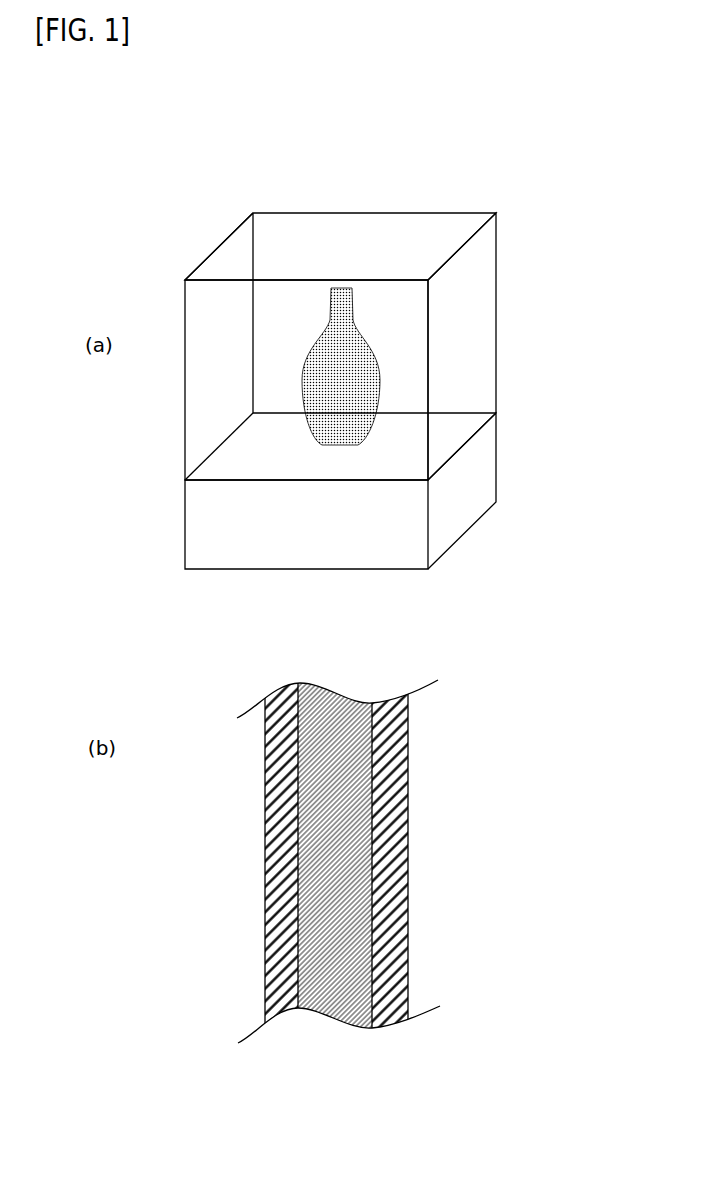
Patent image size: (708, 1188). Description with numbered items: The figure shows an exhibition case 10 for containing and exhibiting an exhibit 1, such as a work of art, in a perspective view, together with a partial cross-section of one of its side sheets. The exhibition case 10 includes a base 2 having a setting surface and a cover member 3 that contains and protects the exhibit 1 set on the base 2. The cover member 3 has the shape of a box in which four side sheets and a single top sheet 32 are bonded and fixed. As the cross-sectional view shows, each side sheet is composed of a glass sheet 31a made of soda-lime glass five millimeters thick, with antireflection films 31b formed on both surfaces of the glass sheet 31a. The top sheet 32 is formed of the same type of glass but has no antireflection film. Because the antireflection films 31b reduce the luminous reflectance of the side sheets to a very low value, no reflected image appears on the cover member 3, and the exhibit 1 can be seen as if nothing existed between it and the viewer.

The exhibition case 10 is at (477, 187).
The exhibit 1 is at (333, 420).
The base 2 is at (470, 478).
The cover member 3 is at (497, 264).
The top sheet 32 is at (350, 252).
The glass sheet 31a is at (338, 715).
The antireflection film 31b is at (277, 830).